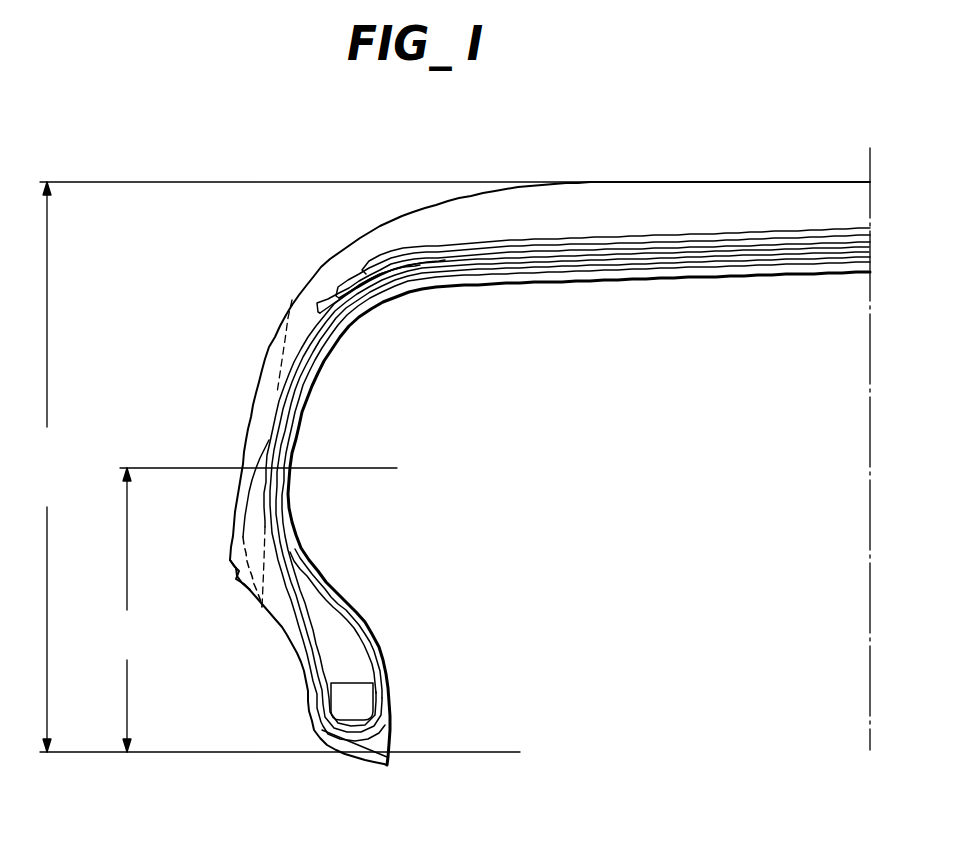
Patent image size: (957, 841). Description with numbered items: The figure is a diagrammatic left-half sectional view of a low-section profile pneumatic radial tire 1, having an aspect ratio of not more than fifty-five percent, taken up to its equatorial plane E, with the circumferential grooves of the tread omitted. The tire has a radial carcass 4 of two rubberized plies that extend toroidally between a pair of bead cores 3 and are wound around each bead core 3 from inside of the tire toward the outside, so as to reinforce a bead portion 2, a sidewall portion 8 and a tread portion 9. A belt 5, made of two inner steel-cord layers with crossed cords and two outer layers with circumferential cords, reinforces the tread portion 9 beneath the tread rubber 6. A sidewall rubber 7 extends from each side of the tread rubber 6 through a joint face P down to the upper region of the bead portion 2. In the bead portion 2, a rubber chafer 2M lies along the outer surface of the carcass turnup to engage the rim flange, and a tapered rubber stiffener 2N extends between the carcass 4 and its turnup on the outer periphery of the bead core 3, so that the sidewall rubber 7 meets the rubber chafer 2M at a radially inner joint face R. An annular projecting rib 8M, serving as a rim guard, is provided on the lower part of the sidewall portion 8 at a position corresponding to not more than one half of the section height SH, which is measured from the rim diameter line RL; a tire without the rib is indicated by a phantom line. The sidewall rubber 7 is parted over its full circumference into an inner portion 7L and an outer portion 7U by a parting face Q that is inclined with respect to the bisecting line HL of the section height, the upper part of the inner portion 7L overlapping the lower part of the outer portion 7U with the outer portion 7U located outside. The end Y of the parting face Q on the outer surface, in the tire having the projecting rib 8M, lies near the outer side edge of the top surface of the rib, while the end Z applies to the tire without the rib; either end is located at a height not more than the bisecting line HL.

The pneumatic radial tire 1 is at (793, 172).
The bead portion 2 is at (296, 675).
The rubber chafer 2M is at (283, 632).
The rubber stiffener 2N is at (342, 648).
The bead core 3 is at (360, 707).
The radial carcass 4 is at (286, 403).
The belt 5 is at (652, 226).
The tread rubber 6 is at (583, 194).
The sidewall rubber 7 is at (253, 418).
The outer portion of sidewall rubber 7U is at (272, 378).
The inner portion of sidewall rubber 7L is at (253, 582).
The sidewall portion 8 is at (232, 445).
The projecting rib 8M is at (240, 565).
The tread portion 9 is at (720, 180).
The equatorial plane E is at (874, 164).
The bisecting line HL is at (380, 468).
The rim diameter line RL is at (208, 753).
The section height SH is at (452, 467).
The joint face P is at (286, 314).
The parting face Q is at (240, 483).
The end of parting face Z is at (237, 527).
The end of parting face Y is at (233, 560).
The joint face R is at (267, 573).